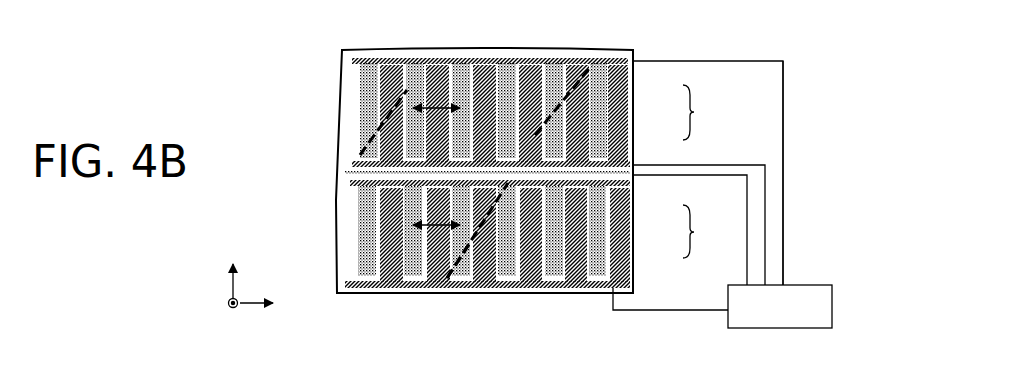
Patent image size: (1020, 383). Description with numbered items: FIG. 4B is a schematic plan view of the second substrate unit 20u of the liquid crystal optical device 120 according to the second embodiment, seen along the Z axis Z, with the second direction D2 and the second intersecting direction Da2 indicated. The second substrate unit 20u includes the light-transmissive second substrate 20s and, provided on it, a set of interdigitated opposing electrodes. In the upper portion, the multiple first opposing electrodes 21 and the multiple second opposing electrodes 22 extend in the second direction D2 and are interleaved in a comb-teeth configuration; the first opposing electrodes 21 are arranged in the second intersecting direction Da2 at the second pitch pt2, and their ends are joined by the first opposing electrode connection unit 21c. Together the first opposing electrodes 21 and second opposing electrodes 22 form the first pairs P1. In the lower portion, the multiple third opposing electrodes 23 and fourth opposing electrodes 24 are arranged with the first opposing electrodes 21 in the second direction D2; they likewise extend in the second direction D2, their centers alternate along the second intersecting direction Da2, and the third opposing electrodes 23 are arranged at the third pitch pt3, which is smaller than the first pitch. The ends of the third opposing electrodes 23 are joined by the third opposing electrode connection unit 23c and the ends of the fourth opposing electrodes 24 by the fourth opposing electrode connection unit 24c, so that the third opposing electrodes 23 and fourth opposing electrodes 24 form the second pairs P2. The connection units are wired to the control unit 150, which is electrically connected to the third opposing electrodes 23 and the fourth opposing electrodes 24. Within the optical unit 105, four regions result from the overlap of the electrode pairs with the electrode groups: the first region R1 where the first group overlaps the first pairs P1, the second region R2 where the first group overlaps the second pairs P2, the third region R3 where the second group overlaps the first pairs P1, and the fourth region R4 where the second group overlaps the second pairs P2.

The second substrate 20s is at (342, 113).
The second substrate unit 20u is at (582, 296).
The first opposing electrode connection unit 21c is at (636, 68).
The first opposing electrodes 21 is at (600, 99).
The second opposing electrodes 22 is at (618, 123).
The third opposing electrode connection unit 23c is at (634, 161).
The third opposing electrodes 23 is at (598, 215).
The fourth opposing electrodes 24 is at (618, 243).
The fourth opposing electrode connection unit 24c is at (630, 286).
The first pairs P1 is at (704, 112).
The second pairs P2 is at (704, 231).
The first region R1 is at (458, 62).
The second region R2 is at (372, 296).
The third region R3 is at (595, 58).
The fourth region R4 is at (536, 293).
The second pitch pt2 is at (410, 85).
The third pitch pt3 is at (440, 225).
The optical unit 105 is at (690, 44).
The liquid crystal optical device 120 is at (799, 85).
The control unit 150 is at (820, 283).
The second direction D2 is at (240, 264).
The second intersecting direction Da2 is at (284, 306).
The Z axis Z is at (227, 320).